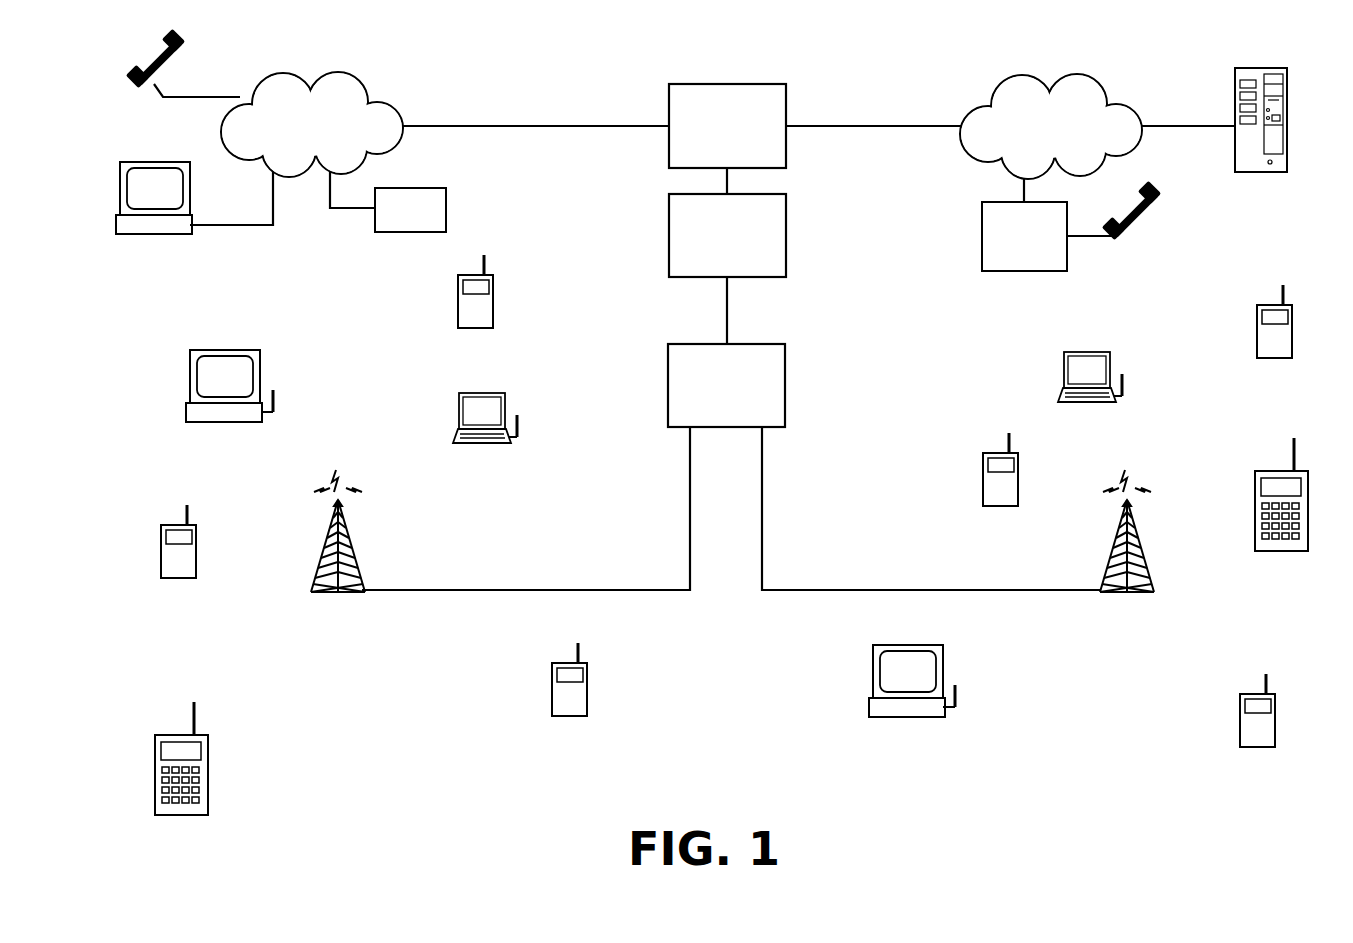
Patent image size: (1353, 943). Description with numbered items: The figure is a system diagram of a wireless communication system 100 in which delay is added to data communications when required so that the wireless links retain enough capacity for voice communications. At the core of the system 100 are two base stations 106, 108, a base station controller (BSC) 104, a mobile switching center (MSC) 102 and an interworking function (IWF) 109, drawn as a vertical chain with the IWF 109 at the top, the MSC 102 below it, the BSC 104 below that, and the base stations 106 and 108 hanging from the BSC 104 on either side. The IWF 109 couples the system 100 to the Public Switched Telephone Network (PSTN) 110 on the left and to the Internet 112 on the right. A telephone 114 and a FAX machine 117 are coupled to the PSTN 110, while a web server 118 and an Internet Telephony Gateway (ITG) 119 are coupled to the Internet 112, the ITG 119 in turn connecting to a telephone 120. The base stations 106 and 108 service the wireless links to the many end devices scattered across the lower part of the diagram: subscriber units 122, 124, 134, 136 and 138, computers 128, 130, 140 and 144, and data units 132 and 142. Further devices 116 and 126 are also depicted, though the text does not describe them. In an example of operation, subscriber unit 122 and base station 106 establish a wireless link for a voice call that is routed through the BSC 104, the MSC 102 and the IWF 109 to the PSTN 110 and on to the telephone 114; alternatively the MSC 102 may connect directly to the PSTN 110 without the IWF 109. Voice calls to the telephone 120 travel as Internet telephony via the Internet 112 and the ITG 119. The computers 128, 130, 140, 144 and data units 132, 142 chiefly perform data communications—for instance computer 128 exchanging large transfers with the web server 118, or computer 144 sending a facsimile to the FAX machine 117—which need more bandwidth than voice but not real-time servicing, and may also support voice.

The wireless communication system 100 is at (993, 820).
The mobile switching center (MSC) 102 is at (786, 208).
The base station controller (BSC) 104 is at (765, 344).
The base station 106 is at (333, 600).
The base station 108 is at (1121, 600).
The interworking function (IWF) 109 is at (738, 84).
The Public Switched Telephone Network (PSTN) 110 is at (355, 84).
The Internet 112 is at (1100, 84).
The telephone 114 is at (131, 80).
The computer 116 is at (118, 193).
The FAX machine 117 is at (446, 210).
The web server 118 is at (1280, 68).
The Internet Telephony Gateway (ITG) 119 is at (982, 236).
The telephone 120 is at (1160, 215).
The subscriber unit 122 is at (458, 301).
The subscriber unit 124 is at (161, 551).
The wireless communication device 126 is at (552, 688).
The computer 128 is at (190, 388).
The computer 130 is at (459, 420).
The data unit 132 is at (155, 763).
The subscriber unit 134 is at (983, 478).
The subscriber unit 136 is at (1257, 328).
The subscriber unit 138 is at (1240, 724).
The computer 140 is at (1064, 372).
The data unit 142 is at (1272, 552).
The computer 144 is at (869, 703).